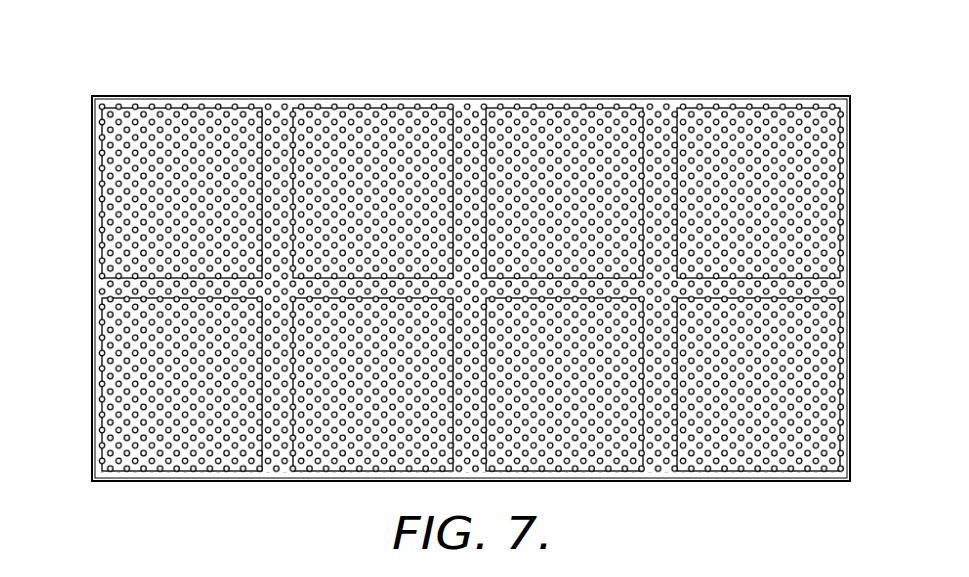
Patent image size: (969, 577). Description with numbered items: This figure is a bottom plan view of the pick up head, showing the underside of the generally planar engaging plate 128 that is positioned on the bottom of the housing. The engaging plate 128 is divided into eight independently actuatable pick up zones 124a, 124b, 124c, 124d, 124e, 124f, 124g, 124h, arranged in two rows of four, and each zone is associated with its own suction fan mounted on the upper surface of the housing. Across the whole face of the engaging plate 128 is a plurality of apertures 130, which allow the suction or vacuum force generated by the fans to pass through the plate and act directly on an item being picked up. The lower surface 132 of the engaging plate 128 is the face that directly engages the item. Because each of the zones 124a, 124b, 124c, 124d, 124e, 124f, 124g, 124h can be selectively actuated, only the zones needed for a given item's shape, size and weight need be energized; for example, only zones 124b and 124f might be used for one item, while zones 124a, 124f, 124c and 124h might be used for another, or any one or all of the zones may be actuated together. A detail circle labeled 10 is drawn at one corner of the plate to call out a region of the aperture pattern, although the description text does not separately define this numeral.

The panel assembly 10 is at (440, 303).
The pick up zone 124a is at (172, 105).
The pick up zone 124b is at (375, 105).
The pick up zone 124c is at (577, 105).
The pick up zone 124d is at (755, 105).
The pick up zone 124e is at (197, 458).
The pick up zone 124f is at (375, 458).
The pick up zone 124g is at (575, 458).
The pick up zone 124h is at (770, 458).
The engaging plate 128 is at (90, 145).
The apertures 130 is at (120, 295).
The lower surface 132 is at (277, 458).